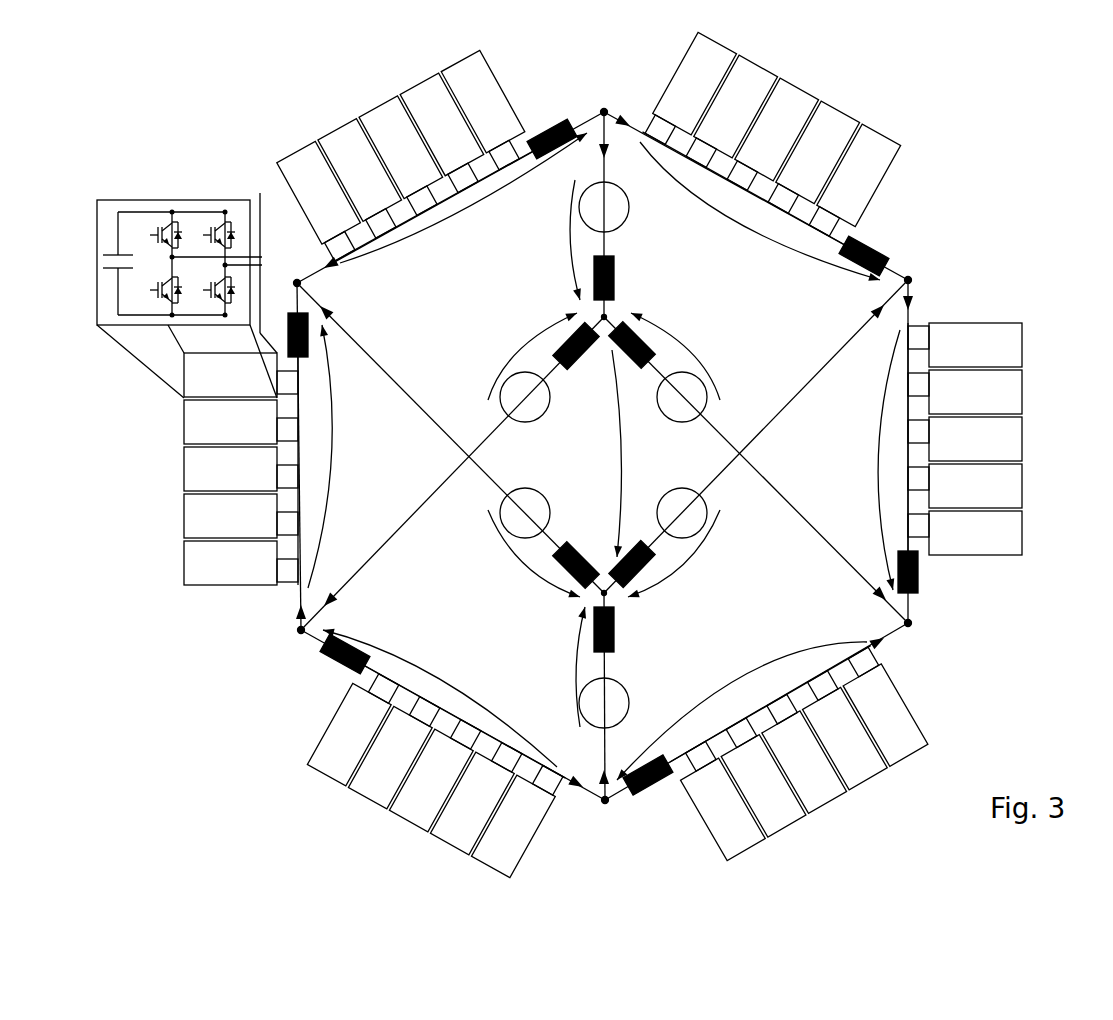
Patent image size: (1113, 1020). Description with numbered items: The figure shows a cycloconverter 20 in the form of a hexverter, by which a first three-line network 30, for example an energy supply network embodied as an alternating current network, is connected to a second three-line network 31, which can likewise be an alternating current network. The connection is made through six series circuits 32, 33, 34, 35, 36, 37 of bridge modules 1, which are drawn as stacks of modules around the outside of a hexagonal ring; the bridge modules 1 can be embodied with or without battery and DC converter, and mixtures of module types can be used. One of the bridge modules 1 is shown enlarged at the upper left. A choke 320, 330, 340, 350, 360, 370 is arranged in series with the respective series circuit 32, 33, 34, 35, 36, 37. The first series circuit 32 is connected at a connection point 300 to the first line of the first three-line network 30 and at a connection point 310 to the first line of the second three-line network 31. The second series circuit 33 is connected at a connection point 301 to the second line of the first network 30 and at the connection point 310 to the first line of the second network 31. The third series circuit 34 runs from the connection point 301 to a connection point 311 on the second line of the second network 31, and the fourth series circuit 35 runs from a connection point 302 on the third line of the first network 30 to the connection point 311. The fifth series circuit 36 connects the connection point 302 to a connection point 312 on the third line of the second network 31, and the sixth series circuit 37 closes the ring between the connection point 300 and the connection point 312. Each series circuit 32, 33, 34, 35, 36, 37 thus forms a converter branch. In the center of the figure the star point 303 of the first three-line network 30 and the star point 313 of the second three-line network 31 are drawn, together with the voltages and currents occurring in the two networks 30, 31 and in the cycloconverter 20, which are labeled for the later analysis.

The bridge module 1 is at (97, 200).
The cycloconverter 20 is at (206, 730).
The first three-line network 30 is at (642, 290).
The second three-line network 31 is at (633, 622).
The first series circuit 32 is at (838, 92).
The second series circuit 33 is at (1042, 445).
The third series circuit 34 is at (848, 822).
The fourth series circuit 35 is at (382, 832).
The fifth series circuit 36 is at (158, 465).
The sixth series circuit 37 is at (358, 102).
The connection point 300 is at (602, 108).
The connection point 301 is at (912, 624).
The connection point 302 is at (298, 633).
The star point 303 is at (604, 322).
The connection point 310 is at (912, 282).
The connection point 311 is at (606, 803).
The connection point 312 is at (294, 282).
The star point 313 is at (604, 590).
The choke 320 is at (875, 252).
The choke 330 is at (922, 582).
The choke 340 is at (650, 790).
The choke 350 is at (332, 665).
The choke 360 is at (308, 352).
The choke 370 is at (552, 126).